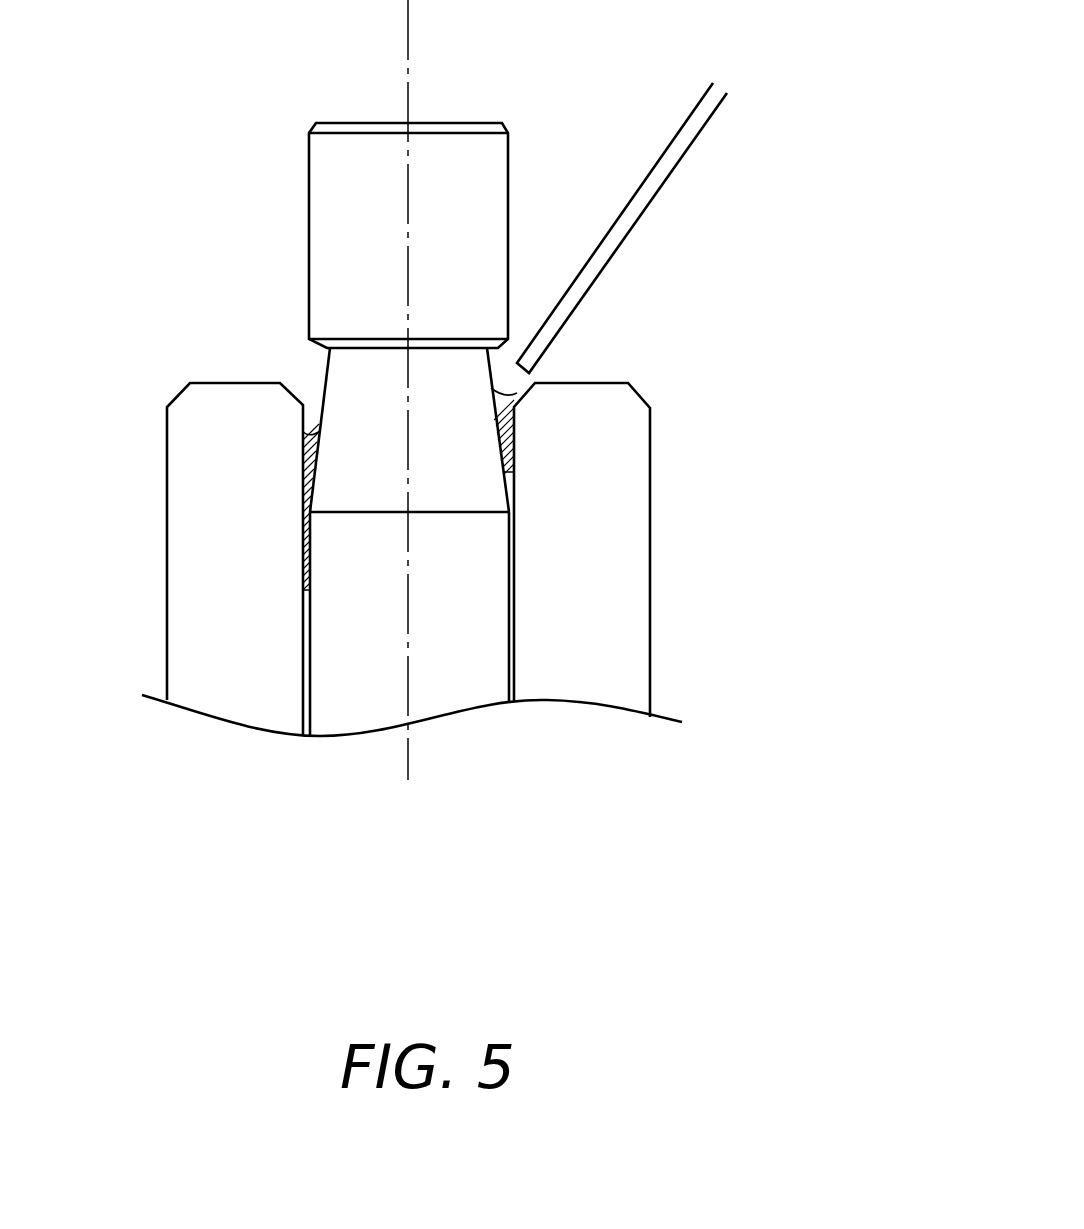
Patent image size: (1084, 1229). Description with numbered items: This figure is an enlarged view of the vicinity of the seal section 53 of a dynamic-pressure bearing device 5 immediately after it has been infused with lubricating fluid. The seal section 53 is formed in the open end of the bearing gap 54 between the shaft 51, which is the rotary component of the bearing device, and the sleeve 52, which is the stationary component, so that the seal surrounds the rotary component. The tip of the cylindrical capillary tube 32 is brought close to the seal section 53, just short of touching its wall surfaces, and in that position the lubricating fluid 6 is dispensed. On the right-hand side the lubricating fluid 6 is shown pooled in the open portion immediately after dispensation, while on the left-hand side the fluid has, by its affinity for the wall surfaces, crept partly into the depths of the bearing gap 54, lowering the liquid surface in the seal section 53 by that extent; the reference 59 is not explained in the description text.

The dynamic-pressure bearing device 5 is at (253, 120).
The shaft 51 is at (453, 183).
The sleeve 52 is at (602, 605).
The seal section 53 is at (308, 375).
The bearing gap 54 is at (305, 540).
The weld bead 59 is at (320, 410).
The lubricating fluid 6 is at (513, 437).
The capillary tube 32 is at (678, 185).